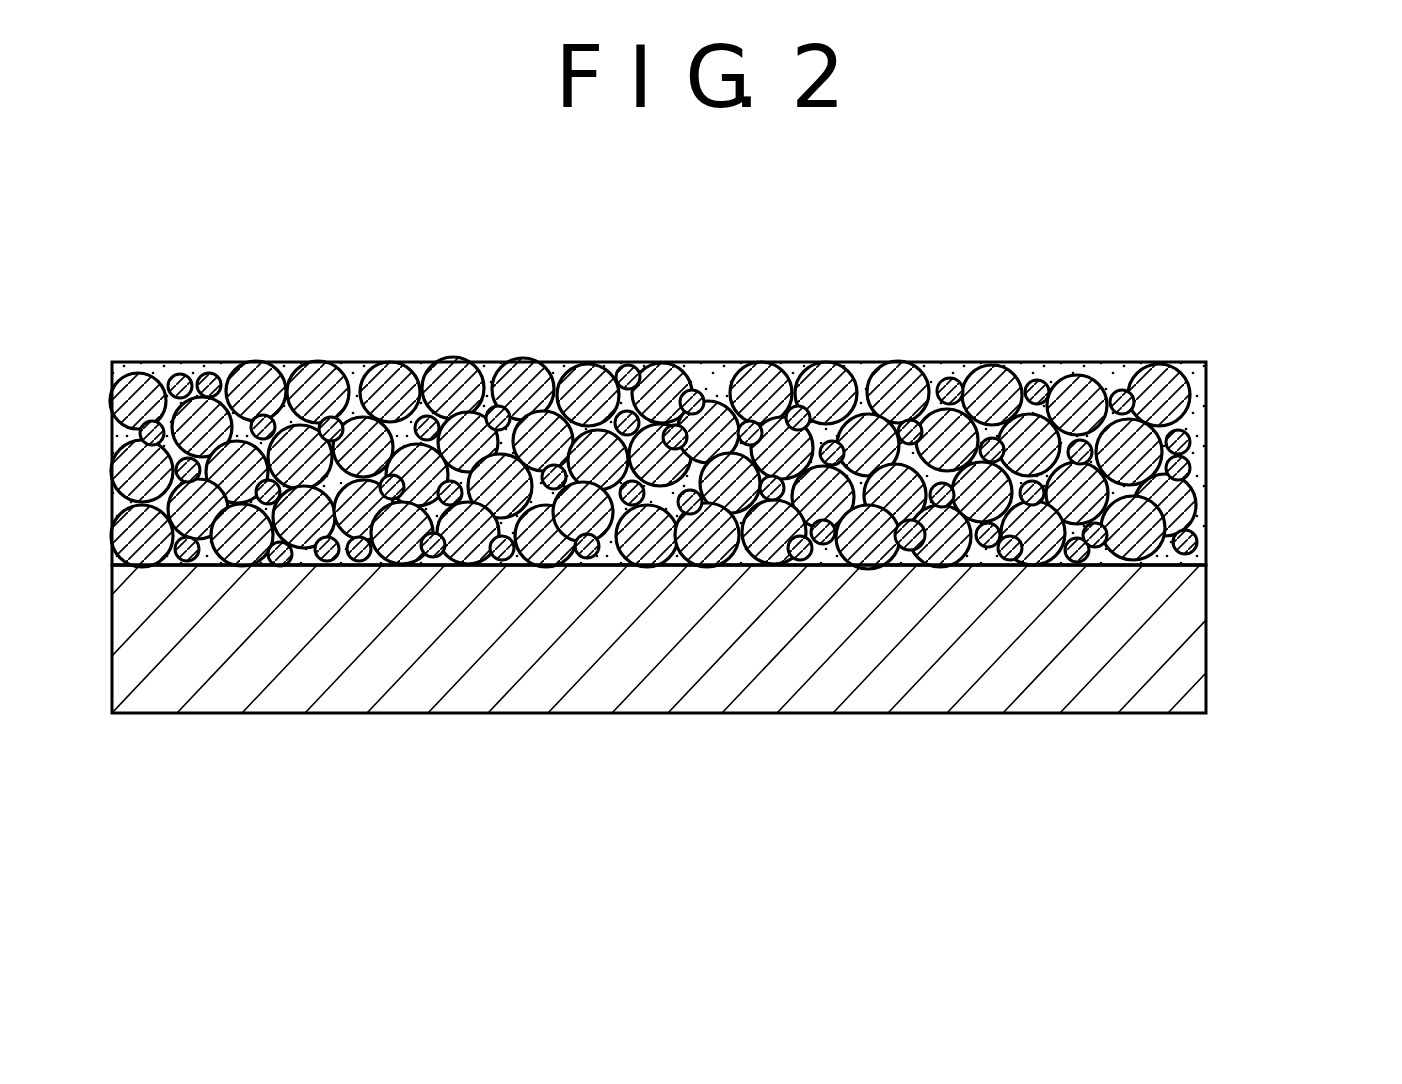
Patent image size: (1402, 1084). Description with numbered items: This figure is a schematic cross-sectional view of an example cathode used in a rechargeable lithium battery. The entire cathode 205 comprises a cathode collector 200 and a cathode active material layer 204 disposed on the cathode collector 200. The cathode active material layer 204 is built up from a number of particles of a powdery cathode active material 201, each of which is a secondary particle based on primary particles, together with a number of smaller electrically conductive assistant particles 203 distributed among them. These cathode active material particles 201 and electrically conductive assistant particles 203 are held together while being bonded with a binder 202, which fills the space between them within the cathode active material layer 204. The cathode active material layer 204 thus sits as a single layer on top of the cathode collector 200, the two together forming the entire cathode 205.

The cathode collector 200 is at (590, 655).
The powdery cathode active material 201 is at (322, 363).
The binder 202 is at (710, 373).
The electrically conductive assistant particle 203 is at (828, 362).
The cathode active material layer 204 is at (1258, 568).
The entire cathode 205 is at (1287, 697).